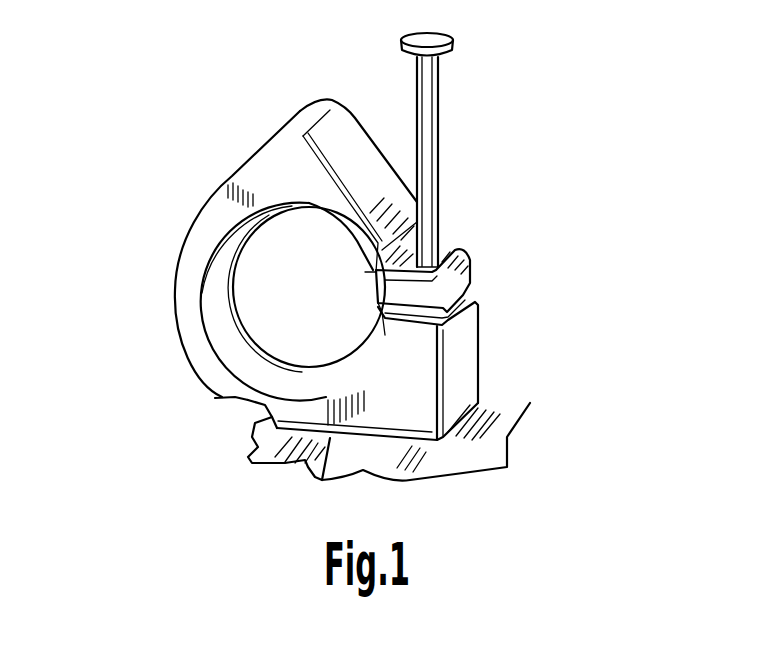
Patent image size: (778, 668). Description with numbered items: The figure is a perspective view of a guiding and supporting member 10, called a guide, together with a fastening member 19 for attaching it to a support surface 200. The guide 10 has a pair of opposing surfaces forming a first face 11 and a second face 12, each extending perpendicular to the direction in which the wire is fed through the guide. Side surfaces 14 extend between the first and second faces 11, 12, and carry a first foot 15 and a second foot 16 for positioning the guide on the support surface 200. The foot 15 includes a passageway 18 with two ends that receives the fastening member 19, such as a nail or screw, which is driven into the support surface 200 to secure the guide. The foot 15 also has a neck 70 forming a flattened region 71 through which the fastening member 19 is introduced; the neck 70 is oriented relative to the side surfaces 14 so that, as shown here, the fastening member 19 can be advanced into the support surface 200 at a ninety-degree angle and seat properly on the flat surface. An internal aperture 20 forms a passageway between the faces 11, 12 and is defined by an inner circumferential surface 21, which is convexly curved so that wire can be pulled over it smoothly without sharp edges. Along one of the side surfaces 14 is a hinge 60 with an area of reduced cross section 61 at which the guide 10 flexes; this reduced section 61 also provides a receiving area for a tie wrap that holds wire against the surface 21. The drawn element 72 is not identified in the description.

The guiding and supporting member 10 is at (188, 146).
The first face 11 is at (190, 343).
The second face 12 is at (353, 114).
The side surfaces 14 is at (300, 112).
The foot 15 is at (363, 162).
The second foot 16 is at (322, 478).
The passageway 18 is at (466, 258).
The fastening member 19 is at (438, 76).
The internal aperture 20 is at (255, 236).
The inner circumferential surface 21 is at (227, 287).
The hinge 60 is at (215, 420).
The area of reduced cross section 61 is at (252, 407).
The neck 70 is at (452, 212).
The flattened region 71 is at (473, 270).
The collar 72 is at (390, 267).
The support surface 200 is at (517, 408).